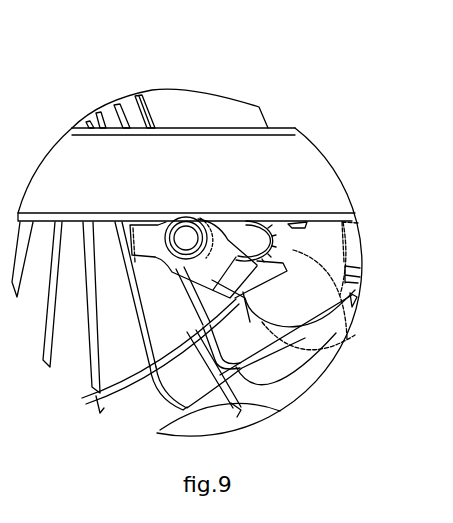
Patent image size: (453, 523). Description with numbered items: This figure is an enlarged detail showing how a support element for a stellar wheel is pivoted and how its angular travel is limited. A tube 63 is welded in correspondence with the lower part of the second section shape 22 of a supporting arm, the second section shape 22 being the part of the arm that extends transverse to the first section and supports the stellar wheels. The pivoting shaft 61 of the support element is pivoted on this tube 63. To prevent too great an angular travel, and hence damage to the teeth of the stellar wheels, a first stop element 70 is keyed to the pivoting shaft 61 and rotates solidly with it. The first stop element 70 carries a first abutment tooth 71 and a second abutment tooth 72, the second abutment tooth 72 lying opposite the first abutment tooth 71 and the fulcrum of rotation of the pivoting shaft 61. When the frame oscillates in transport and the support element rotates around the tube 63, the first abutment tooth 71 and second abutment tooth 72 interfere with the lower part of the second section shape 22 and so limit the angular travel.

The second section shape 22 is at (314, 192).
The pivoting shaft 61 is at (322, 252).
The tube 63 is at (244, 235).
The first stop element 70 is at (188, 197).
The first abutment tooth 71 is at (266, 281).
The second abutment tooth 72 is at (148, 242).